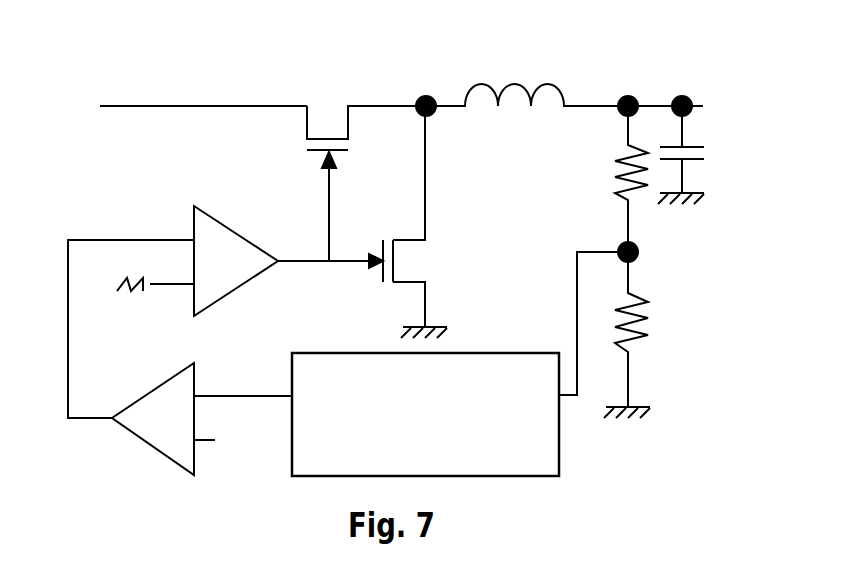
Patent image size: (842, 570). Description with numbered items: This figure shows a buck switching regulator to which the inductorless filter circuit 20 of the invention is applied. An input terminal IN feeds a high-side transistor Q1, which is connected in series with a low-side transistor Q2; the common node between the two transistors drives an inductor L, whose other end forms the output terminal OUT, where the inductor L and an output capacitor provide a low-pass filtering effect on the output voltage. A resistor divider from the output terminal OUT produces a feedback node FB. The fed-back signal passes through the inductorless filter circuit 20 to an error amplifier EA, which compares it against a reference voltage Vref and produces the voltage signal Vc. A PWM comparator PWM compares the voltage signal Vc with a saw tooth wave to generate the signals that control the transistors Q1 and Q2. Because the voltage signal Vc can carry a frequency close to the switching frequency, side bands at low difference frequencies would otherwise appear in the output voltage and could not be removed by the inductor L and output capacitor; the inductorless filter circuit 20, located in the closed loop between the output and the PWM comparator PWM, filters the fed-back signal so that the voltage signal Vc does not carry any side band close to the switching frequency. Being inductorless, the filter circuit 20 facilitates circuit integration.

The inductorless filter circuit 20 is at (412, 461).
The transistor Q1 is at (366, 163).
The transistor Q2 is at (370, 222).
The inductor L is at (527, 64).
The feedback node FB is at (622, 316).
The input terminal IN is at (179, 108).
The output terminal OUT is at (700, 100).
The PWM comparator PWM is at (252, 273).
The error amplifier EA is at (178, 432).
The voltage signal Vc is at (131, 310).
The reference voltage Vref is at (241, 436).